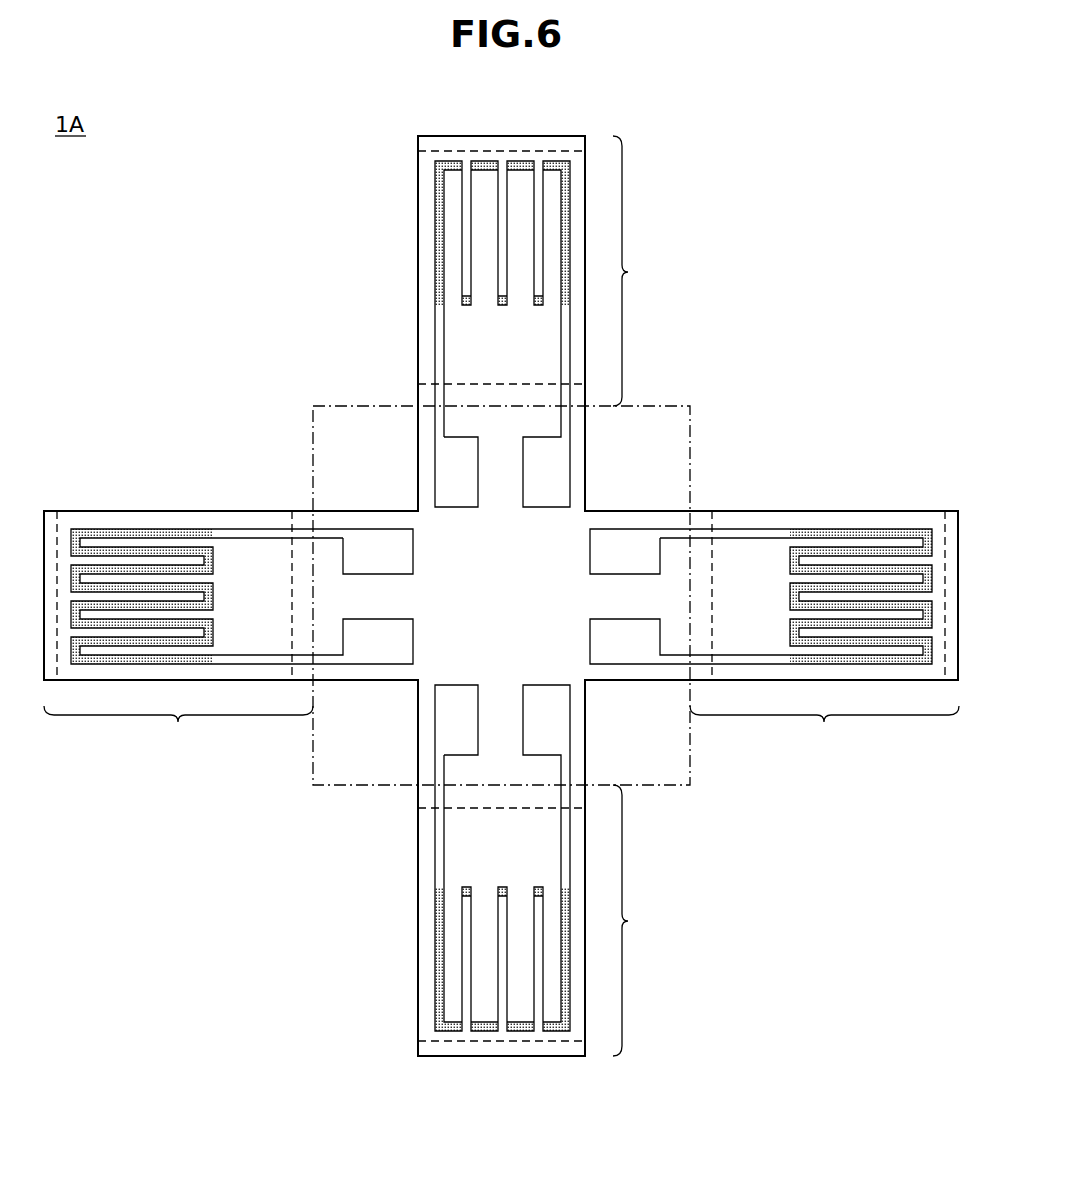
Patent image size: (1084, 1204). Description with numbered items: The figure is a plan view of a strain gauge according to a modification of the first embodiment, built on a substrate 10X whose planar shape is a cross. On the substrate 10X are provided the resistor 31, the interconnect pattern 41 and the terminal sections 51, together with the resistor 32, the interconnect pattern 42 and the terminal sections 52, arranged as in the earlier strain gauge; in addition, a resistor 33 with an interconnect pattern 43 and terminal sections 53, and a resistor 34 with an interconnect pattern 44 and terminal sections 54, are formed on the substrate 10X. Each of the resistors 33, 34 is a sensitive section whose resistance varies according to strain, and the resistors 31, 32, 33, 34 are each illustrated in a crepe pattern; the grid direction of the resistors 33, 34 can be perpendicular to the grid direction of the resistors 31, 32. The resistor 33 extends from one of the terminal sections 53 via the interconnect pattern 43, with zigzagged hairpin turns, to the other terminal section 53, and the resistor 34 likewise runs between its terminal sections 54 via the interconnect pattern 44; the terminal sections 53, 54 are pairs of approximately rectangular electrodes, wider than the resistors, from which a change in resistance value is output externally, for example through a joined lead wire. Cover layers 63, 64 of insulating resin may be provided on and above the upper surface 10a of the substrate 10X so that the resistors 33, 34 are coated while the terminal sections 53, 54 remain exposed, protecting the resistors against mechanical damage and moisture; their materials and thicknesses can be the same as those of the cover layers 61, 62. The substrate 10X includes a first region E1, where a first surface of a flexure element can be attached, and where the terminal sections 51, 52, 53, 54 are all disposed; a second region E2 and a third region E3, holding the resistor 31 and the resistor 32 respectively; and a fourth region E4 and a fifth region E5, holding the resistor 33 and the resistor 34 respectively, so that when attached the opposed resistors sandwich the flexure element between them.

The substrate 10X is at (72, 502).
The upper surface 10a is at (118, 520).
The resistor 31 is at (158, 530).
The resistor 32 is at (860, 530).
The resistor 33 is at (437, 232).
The resistor 34 is at (440, 958).
The interconnect pattern 41 is at (250, 530).
The interconnect pattern 42 is at (752, 535).
The interconnect pattern 43 is at (440, 342).
The interconnect pattern 44 is at (440, 847).
The terminal sections 51 is at (380, 550).
The terminal sections 52 is at (623, 552).
The terminal sections 53 is at (455, 468).
The terminal sections 54 is at (455, 718).
The cover layer 61 is at (294, 520).
The cover layer 62 is at (712, 520).
The cover layer 63 is at (418, 384).
The cover layer 64 is at (418, 808).
The first region E1 is at (308, 743).
The second region E2 is at (178, 729).
The third region E3 is at (824, 729).
The fourth region E4 is at (637, 271).
The fifth region E5 is at (637, 920).